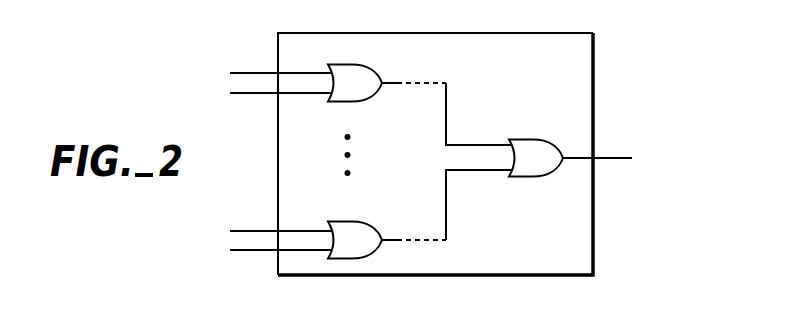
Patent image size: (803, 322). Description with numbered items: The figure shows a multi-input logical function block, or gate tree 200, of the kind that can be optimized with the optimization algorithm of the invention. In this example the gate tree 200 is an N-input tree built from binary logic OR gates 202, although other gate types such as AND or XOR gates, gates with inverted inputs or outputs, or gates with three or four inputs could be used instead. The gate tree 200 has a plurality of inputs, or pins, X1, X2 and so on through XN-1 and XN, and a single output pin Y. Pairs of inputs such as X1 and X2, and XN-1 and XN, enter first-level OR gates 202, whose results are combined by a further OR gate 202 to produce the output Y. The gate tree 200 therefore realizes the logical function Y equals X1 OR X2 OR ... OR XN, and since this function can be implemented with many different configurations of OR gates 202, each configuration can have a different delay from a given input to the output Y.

The gate tree 200 is at (595, 72).
The binary logic OR gate 202 is at (376, 67).
The input X1 is at (268, 72).
The input X2 is at (268, 96).
The input XN-1 is at (260, 225).
The input XN is at (267, 252).
The output Y is at (606, 159).